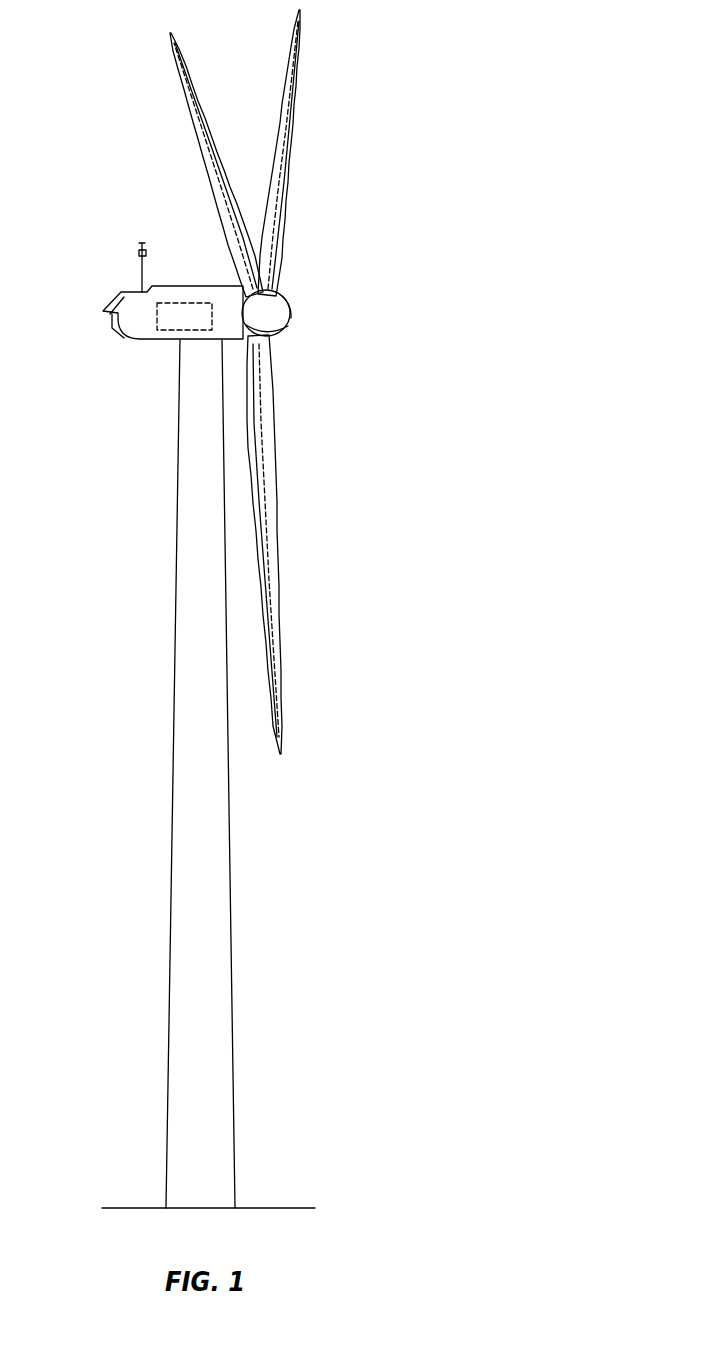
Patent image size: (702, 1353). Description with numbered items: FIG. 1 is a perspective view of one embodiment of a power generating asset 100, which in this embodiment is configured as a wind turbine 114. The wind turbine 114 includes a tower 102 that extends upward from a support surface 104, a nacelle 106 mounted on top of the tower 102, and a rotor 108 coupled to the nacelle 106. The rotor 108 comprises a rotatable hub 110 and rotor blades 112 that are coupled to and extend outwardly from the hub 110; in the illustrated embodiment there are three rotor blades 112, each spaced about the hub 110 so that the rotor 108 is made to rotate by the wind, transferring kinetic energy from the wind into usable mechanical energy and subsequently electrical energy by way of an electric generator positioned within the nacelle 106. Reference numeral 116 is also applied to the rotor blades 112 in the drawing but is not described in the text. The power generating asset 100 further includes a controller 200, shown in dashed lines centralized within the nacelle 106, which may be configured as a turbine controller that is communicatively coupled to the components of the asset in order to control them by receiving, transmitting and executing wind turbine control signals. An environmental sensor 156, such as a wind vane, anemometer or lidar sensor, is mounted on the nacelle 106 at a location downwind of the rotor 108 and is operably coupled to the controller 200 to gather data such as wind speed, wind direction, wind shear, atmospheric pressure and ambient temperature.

The power generating asset 100 is at (439, 111).
The tower 102 is at (212, 847).
The support surface 104 is at (275, 1208).
The nacelle 106 is at (150, 345).
The rotor 108 is at (335, 266).
The rotatable hub 110 is at (290, 304).
The rotor blade 112 is at (282, 133).
The wind turbine 114 is at (250, 382).
The spar cap 116 is at (212, 178).
The environmental sensor 156 is at (140, 278).
The controller 200 is at (172, 302).